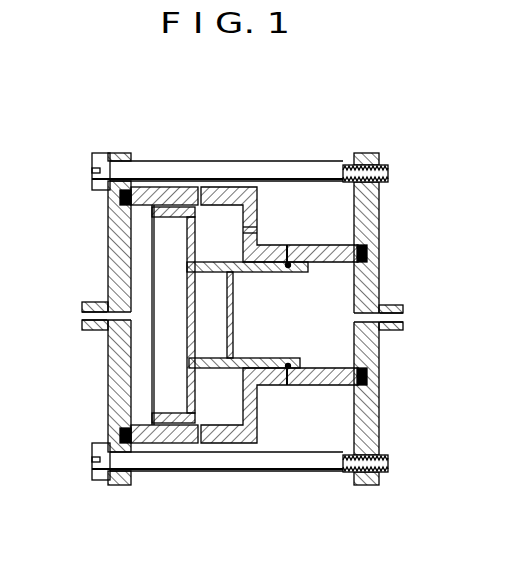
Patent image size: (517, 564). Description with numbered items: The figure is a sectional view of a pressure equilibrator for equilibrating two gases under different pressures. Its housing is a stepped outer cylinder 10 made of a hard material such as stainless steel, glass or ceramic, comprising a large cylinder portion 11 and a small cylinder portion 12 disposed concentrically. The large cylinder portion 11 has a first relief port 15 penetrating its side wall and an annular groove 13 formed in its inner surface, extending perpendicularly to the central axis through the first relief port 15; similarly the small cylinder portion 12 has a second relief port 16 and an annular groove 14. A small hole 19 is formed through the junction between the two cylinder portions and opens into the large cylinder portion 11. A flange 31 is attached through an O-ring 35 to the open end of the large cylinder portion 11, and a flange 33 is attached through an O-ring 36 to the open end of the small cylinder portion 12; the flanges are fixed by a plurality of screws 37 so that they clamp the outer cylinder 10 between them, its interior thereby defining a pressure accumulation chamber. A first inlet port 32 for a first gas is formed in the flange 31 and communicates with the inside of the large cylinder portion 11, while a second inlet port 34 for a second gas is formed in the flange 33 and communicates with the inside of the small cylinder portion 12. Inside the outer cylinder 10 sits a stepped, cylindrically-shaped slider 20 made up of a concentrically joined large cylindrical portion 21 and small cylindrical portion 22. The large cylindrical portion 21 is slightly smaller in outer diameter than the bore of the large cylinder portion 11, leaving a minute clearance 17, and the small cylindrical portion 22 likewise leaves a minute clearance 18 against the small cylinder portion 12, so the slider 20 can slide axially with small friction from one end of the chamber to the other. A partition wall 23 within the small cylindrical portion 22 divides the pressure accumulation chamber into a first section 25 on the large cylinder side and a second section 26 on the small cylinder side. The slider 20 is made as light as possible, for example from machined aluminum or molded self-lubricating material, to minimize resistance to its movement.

The outer cylinder 10 is at (240, 186).
The large cylinder portion 11 is at (222, 433).
The small cylinder portion 12 is at (281, 246).
The annular groove 13 is at (218, 232).
The annular groove 14 is at (303, 266).
The first relief port 15 is at (200, 210).
The second relief port 16 is at (290, 258).
The clearance 17 is at (153, 188).
The clearance 18 is at (313, 266).
The small hole 19 is at (258, 238).
The slider 20 is at (200, 320).
The large cylindrical portion 21 is at (172, 420).
The small cylindrical portion 22 is at (304, 368).
The partition wall 23 is at (235, 330).
The first section 25 is at (140, 355).
The second section 26 is at (343, 345).
The flange 31 is at (108, 227).
The first inlet port 32 is at (82, 312).
The flange 33 is at (379, 212).
The second inlet port 34 is at (403, 316).
The O-ring 35 is at (124, 433).
The O-ring 36 is at (370, 378).
The screws 37 is at (92, 477).